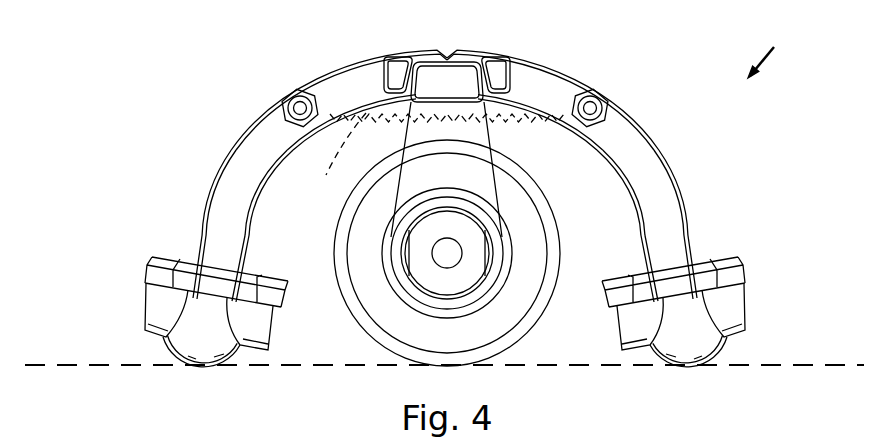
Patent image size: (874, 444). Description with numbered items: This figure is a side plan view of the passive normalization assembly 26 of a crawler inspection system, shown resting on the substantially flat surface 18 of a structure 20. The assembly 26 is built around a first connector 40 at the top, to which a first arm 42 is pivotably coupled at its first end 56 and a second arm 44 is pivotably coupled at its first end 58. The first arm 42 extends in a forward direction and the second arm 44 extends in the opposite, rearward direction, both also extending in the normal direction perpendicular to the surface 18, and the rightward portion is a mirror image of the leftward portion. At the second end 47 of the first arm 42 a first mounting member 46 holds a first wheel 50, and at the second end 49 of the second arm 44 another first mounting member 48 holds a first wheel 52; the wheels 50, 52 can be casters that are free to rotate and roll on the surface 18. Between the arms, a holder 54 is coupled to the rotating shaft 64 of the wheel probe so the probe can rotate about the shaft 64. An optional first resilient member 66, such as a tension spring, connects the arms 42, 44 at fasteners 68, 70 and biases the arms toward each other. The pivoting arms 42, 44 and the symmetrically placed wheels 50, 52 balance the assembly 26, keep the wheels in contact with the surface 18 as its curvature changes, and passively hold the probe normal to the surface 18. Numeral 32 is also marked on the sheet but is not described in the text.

The substantially flat surface 18 is at (837, 365).
The structure 20 is at (586, 410).
The assembly 26 is at (771, 48).
The base 32 is at (65, 429).
The first connector 40 is at (434, 93).
The first arm 42 is at (641, 160).
The second arm 44 is at (243, 152).
The first mounting member 46 is at (722, 272).
The second end 47 is at (670, 258).
The first mounting member 48 is at (168, 258).
The second end 49 is at (218, 265).
The first wheel 50 is at (724, 350).
The first wheel 52 is at (160, 348).
The holder 54 is at (433, 182).
The first end 56 is at (547, 88).
The first end 58 is at (333, 85).
The rotating shaft 64 is at (452, 252).
The first resilient member 66 is at (439, 159).
The fastener 68 is at (605, 100).
The fastener 70 is at (286, 99).